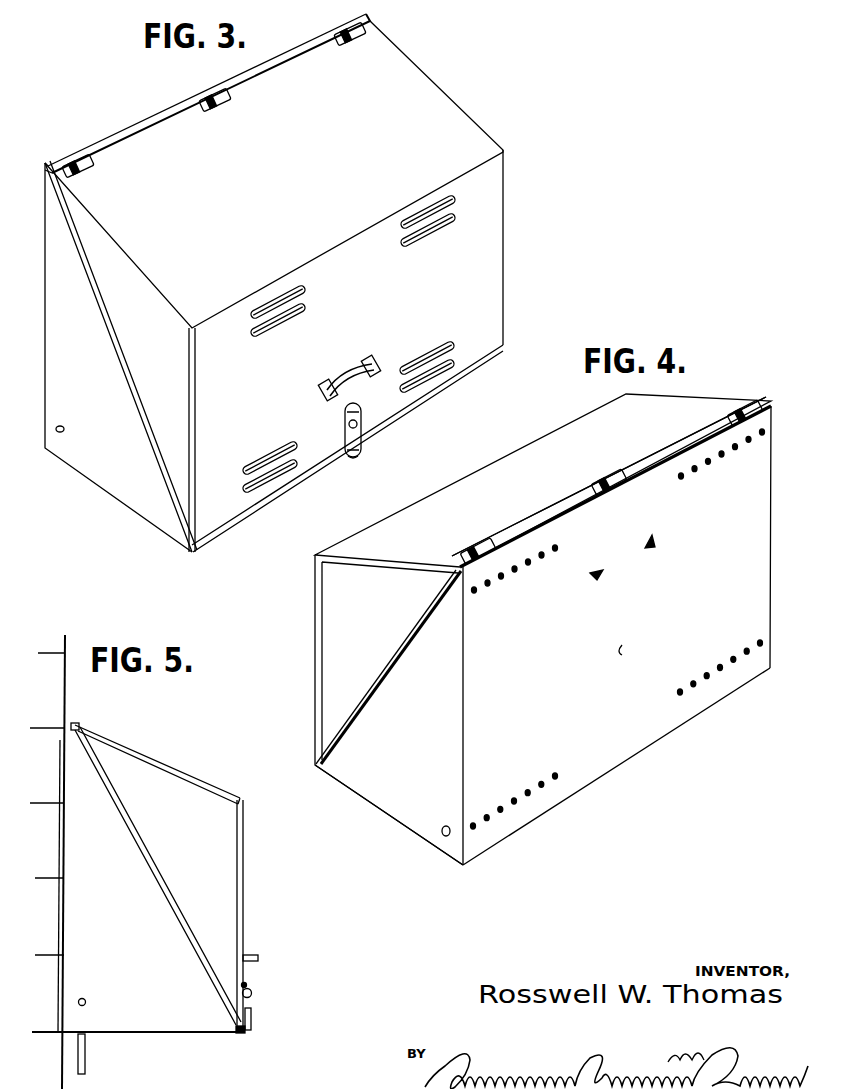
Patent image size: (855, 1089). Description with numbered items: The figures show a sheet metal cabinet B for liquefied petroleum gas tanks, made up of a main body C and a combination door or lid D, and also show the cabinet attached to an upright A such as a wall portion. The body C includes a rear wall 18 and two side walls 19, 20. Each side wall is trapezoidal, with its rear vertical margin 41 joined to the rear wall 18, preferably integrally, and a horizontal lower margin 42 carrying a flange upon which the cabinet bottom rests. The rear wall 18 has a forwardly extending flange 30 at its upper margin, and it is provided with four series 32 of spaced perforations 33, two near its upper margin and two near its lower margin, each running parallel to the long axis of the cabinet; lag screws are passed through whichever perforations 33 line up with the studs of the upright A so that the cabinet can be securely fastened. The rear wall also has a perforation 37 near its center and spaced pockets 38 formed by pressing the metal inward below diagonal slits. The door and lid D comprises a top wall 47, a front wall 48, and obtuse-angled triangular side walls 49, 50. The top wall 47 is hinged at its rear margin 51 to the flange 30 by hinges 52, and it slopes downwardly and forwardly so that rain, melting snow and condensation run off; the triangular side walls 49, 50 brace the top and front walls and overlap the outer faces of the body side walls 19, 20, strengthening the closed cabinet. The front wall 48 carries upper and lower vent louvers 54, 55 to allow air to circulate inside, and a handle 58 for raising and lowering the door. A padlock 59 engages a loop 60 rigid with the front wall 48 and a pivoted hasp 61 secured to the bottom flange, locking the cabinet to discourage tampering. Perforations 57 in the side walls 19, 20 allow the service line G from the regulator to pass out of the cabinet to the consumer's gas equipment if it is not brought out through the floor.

In FIG. 4, the rear wall 18 is at (605, 760).
In FIG. 3, the side wall 19 is at (125, 482).
In FIG. 5, the side wall 19 is at (175, 1015).
In FIG. 4, the side wall 20 is at (378, 785).
In FIG. 3, the forwardly extending flange 30 is at (135, 116).
In FIG. 4, the forwardly extending flange 30 is at (523, 532).
In FIG. 5, the forwardly extending flange 30 is at (157, 764).
In FIG. 4, the series of perforations 32 is at (540, 590).
In FIG. 4, the perforations 33 is at (520, 560).
In FIG. 4, the perforation 37 is at (635, 654).
In FIG. 4, the pockets 38 is at (652, 540).
In FIG. 4, the rear vertical margin 41 is at (772, 545).
In FIG. 4, the horizontal lower margin 42 is at (420, 833).
In FIG. 5, the horizontal lower margin 42 is at (232, 1035).
In FIG. 3, the top wall 47 is at (460, 104).
In FIG. 4, the top wall 47 is at (535, 452).
In FIG. 3, the front wall 48 is at (495, 256).
In FIG. 3, the side wall 49 is at (140, 372).
In FIG. 5, the side wall 49 is at (225, 868).
In FIG. 4, the side wall 50 is at (322, 645).
In FIG. 3, the rear margin 51 is at (290, 40).
In FIG. 4, the rear margin 51 is at (565, 512).
In FIG. 3, the hinges 52 is at (92, 170).
In FIG. 4, the hinges 52 is at (606, 478).
In FIG. 5, the hinges 52 is at (80, 722).
In FIG. 3, the upper vent louvers 54 is at (402, 226).
In FIG. 3, the lower vent louvers 55 is at (470, 325).
In FIG. 3, the perforations 57 is at (64, 430).
In FIG. 4, the perforations 57 is at (446, 826).
In FIG. 5, the perforations 57 is at (86, 1000).
In FIG. 3, the handle 58 is at (348, 378).
In FIG. 5, the handle 58 is at (258, 950).
In FIG. 3, the padlock 59 is at (361, 437).
In FIG. 5, the padlock 59 is at (251, 1018).
In FIG. 3, the loop 60 is at (361, 418).
In FIG. 5, the loop 60 is at (252, 992).
In FIG. 3, the pivoted hasp 61 is at (346, 420).
In FIG. 5, the pivoted hasp 61 is at (246, 982).
In FIG. 5, the upright A is at (50, 700).
In FIG. 3, the cabinet B is at (40, 452).
In FIG. 4, the cabinet B is at (463, 868).
In FIG. 5, the cabinet B is at (66, 745).
In FIG. 3, the main body C is at (38, 170).
In FIG. 4, the main body C is at (548, 803).
In FIG. 5, the main body C is at (80, 915).
In FIG. 3, the combination door or lid D is at (500, 145).
In FIG. 4, the combination door or lid D is at (322, 570).
In FIG. 5, the combination door or lid D is at (160, 780).
In FIG. 5, the service line G is at (86, 1058).